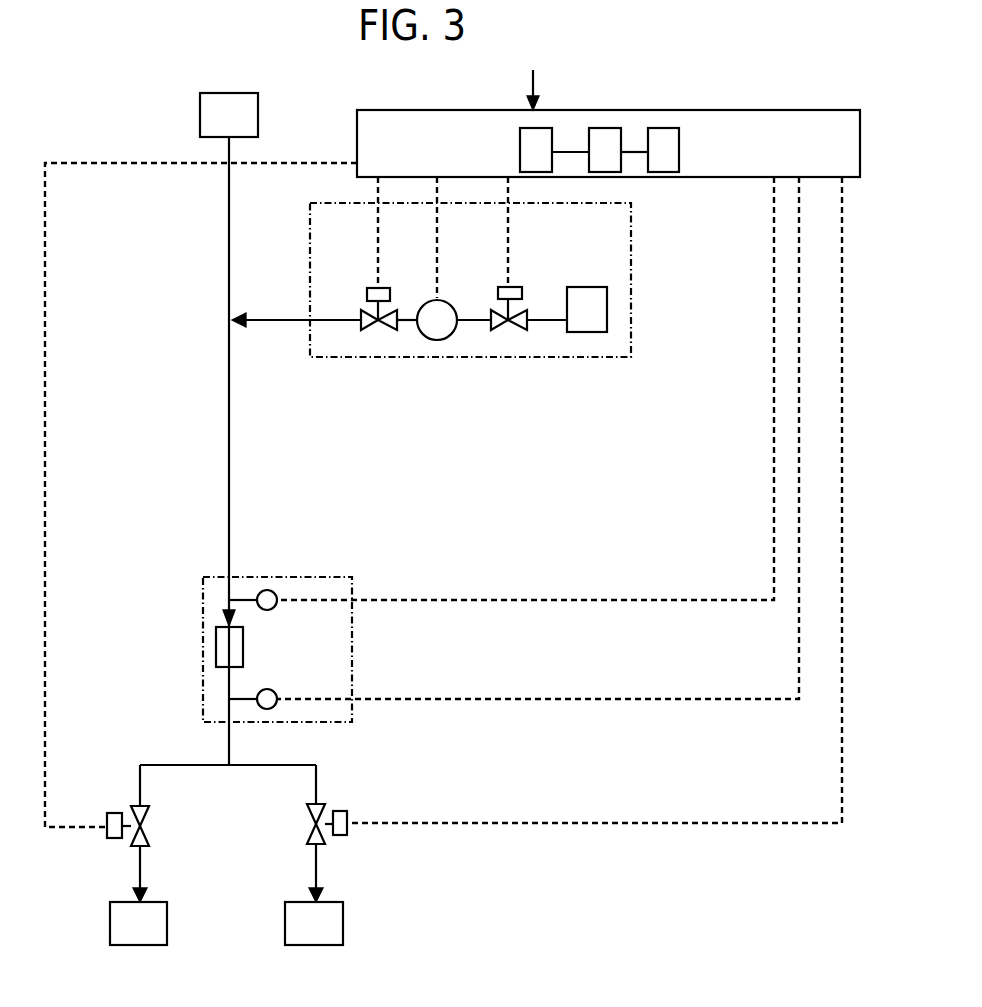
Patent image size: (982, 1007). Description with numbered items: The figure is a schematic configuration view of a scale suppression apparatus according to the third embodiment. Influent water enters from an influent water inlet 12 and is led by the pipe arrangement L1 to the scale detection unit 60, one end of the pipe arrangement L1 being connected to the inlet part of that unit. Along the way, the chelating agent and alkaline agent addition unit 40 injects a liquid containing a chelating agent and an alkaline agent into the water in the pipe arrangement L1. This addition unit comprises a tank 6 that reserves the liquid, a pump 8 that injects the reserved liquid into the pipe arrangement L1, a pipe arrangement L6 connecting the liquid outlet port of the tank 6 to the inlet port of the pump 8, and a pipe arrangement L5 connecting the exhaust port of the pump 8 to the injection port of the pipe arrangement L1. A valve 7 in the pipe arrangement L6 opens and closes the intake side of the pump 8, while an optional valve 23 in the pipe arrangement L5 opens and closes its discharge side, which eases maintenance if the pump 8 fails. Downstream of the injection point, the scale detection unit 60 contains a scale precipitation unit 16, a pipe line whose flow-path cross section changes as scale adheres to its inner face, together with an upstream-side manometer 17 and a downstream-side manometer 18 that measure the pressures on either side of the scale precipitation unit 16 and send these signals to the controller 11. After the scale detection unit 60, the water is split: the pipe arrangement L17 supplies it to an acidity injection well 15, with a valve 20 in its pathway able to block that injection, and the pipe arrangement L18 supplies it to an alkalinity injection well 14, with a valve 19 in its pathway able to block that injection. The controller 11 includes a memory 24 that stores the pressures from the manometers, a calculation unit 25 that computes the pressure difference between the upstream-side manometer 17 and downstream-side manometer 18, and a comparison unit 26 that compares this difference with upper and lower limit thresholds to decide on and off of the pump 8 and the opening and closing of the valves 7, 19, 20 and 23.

The controller 11 is at (452, 108).
The influent water inlet 12 is at (260, 117).
The memory 24 is at (545, 128).
The calculation unit 25 is at (611, 128).
The comparison unit 26 is at (665, 128).
The chelating agent and alkaline agent addition unit 40 is at (632, 268).
The valve 23 is at (387, 290).
The pump 8 is at (450, 299).
The valve 7 is at (518, 287).
The tank 6 is at (583, 288).
The scale detection unit 60 is at (202, 622).
The upstream-side manometer 17 is at (273, 610).
The scale precipitation unit 16 is at (244, 648).
The downstream-side manometer 18 is at (277, 690).
The valve 20 is at (108, 815).
The valve 19 is at (350, 815).
The acidity injection well 15 is at (168, 928).
The alkalinity injection well 14 is at (344, 930).
The pipe arrangement L1 is at (228, 191).
The pipe arrangement L5 is at (343, 318).
The pipe arrangement L6 is at (543, 317).
The pipe arrangement L17 is at (138, 795).
The pipe arrangement L18 is at (317, 797).